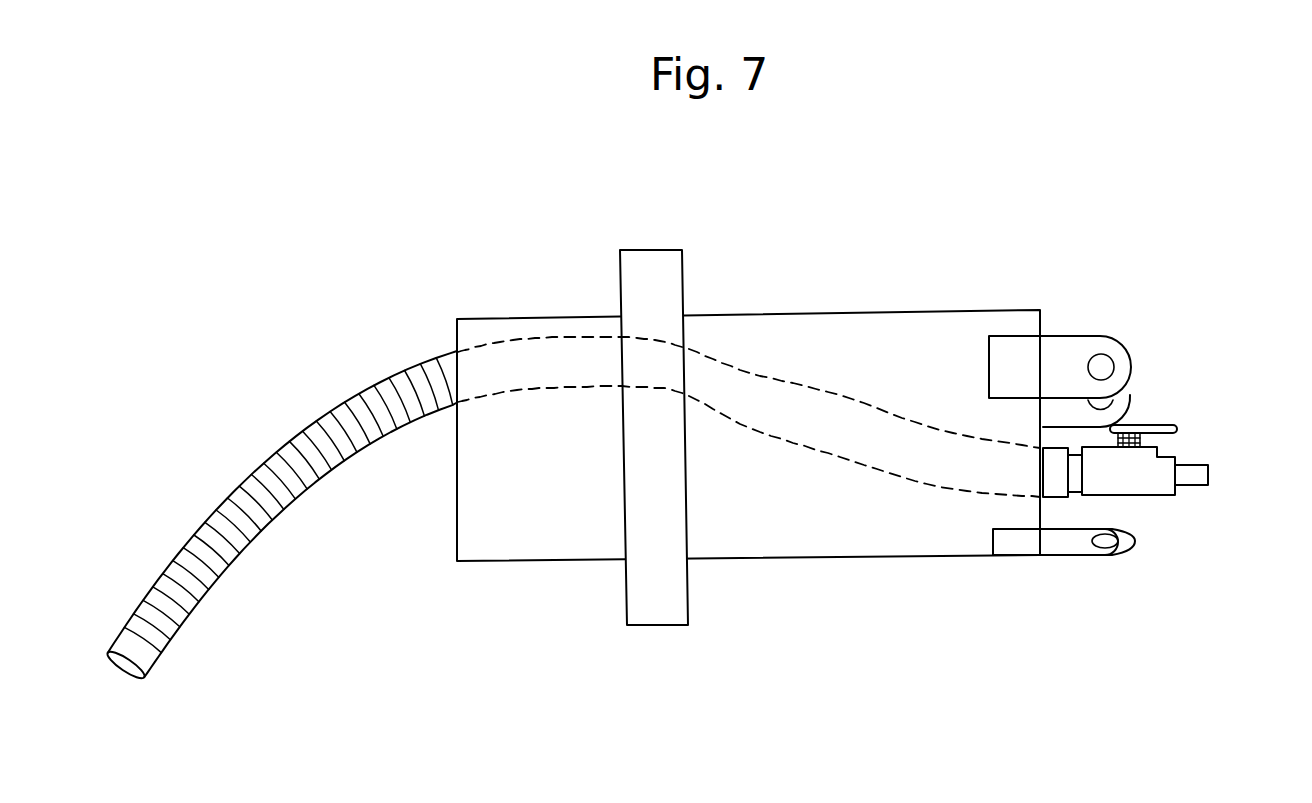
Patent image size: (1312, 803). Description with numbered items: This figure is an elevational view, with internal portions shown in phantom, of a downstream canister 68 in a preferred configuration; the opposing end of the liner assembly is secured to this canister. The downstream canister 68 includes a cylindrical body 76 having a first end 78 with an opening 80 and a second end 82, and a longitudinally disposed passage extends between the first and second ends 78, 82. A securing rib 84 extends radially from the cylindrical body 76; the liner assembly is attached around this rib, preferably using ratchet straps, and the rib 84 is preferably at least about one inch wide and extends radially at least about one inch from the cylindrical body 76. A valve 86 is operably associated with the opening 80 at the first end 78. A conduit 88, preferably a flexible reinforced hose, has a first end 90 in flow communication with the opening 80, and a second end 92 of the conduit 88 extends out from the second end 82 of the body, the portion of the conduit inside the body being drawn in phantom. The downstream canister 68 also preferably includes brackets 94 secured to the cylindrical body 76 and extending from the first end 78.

The downstream canister 68 is at (950, 218).
The cylindrical body 76 is at (775, 542).
The first end 78 is at (1029, 570).
The opening 80 is at (1220, 480).
The second end 82 is at (456, 583).
The securing rib 84 is at (670, 284).
The valve 86 is at (1161, 406).
The conduit 88 is at (345, 417).
The first end of conduit 90 is at (1030, 470).
The second end of conduit 92 is at (152, 666).
The brackets 94 is at (1072, 350).